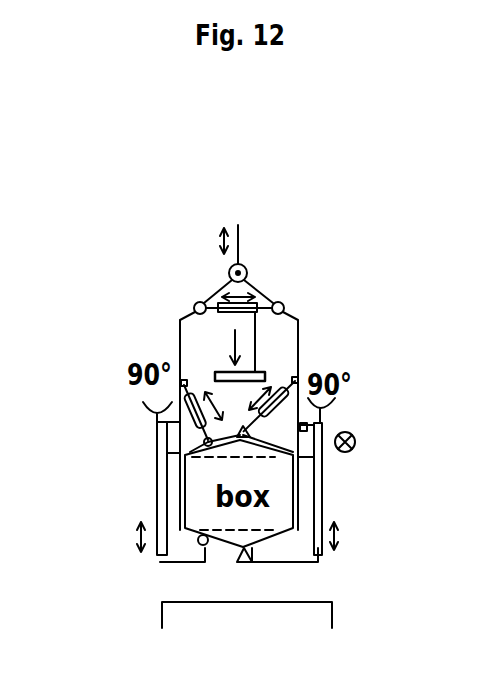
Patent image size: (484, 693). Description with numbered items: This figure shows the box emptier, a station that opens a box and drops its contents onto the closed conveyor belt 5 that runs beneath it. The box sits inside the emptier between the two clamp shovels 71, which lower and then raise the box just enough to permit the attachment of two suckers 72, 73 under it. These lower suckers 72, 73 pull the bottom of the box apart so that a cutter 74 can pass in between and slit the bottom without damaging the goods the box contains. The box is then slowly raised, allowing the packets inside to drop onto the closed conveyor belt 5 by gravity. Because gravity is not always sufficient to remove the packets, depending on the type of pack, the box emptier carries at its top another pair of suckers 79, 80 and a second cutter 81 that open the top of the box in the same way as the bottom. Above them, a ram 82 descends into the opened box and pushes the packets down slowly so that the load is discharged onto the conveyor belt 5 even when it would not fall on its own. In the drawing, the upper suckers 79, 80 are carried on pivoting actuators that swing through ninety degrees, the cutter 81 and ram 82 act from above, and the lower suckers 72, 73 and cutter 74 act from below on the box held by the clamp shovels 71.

The closed conveyor belt 5 is at (247, 627).
The clamp shovels 71 is at (260, 419).
The sucker 72 is at (180, 600).
The sucker 73 is at (199, 543).
The cutter 74 is at (245, 568).
The sucker 79 is at (141, 467).
The sucker 80 is at (177, 453).
The cutter 81 is at (293, 452).
The ram 82 is at (203, 372).